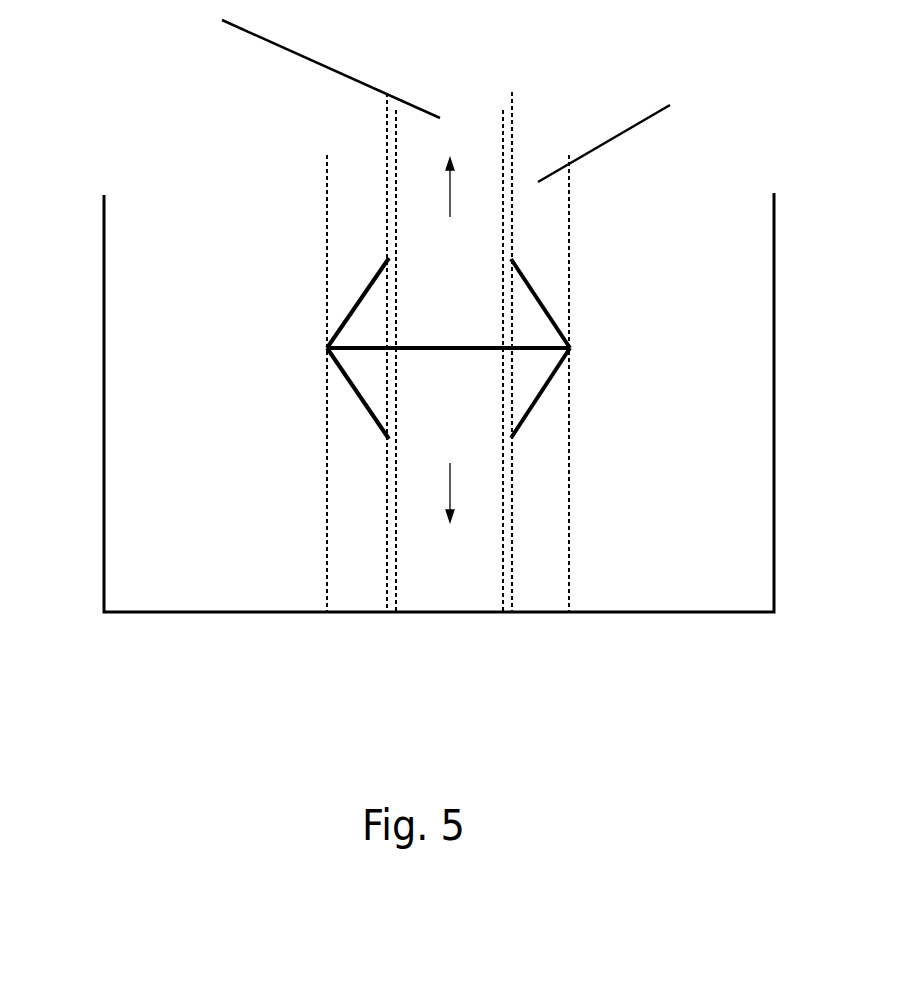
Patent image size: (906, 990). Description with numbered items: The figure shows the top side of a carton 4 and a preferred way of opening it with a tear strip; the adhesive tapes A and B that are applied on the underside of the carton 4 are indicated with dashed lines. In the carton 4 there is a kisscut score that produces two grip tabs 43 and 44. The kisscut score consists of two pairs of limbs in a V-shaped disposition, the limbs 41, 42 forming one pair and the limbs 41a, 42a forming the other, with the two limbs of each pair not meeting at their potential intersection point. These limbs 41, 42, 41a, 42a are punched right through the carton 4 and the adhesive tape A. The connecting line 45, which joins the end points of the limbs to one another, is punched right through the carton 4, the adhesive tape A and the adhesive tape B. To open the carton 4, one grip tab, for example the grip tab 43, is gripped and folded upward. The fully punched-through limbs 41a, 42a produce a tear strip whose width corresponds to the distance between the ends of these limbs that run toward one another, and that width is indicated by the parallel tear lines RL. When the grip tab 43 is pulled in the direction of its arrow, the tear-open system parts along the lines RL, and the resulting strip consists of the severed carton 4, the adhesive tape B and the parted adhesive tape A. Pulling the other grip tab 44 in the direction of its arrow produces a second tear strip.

The carton 4 is at (150, 425).
The limb 41 is at (537, 293).
The limb 41a is at (557, 368).
The limb 42 is at (370, 292).
The limb 42a is at (357, 396).
The grip tab 43 is at (448, 395).
The grip tab 44 is at (453, 293).
The connecting line 45 is at (428, 351).
The adhesive tape A is at (619, 135).
The adhesive tape B is at (322, 63).
The tear lines RL is at (385, 578).